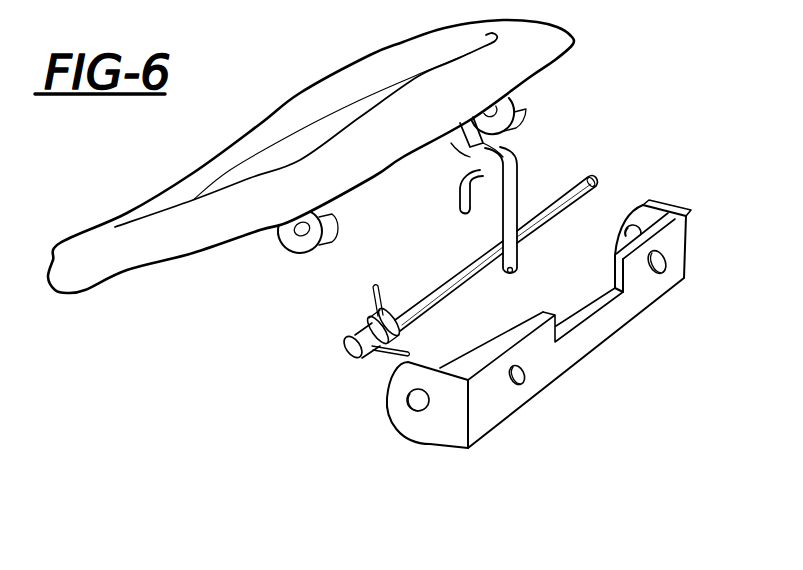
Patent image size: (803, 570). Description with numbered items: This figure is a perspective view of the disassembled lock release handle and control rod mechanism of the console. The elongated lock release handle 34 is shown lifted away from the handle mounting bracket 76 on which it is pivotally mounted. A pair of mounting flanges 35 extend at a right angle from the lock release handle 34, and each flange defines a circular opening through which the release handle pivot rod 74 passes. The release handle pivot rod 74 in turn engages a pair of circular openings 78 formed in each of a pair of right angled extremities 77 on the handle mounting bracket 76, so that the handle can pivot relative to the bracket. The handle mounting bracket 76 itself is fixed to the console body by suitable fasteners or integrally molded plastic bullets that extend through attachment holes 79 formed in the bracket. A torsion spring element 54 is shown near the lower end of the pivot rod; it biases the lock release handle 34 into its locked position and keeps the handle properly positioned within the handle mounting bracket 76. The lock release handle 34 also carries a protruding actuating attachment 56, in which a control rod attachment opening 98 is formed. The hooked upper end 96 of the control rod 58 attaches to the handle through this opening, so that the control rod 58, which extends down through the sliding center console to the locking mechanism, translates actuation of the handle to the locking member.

The lock release handle 34 is at (75, 269).
The mounting flanges 35 is at (272, 258).
The torsion spring element 54 is at (367, 326).
The protruding actuating attachment 56 is at (510, 145).
The control rod 58 is at (520, 188).
The release handle pivot rod 74 is at (605, 193).
The handle mounting bracket 76 is at (418, 422).
The right angled extremities 77 is at (441, 362).
The circular openings 78 is at (405, 405).
The attachment holes 79 is at (524, 380).
The hooked upper end 96 is at (457, 191).
The control rod attachment opening 98 is at (481, 206).